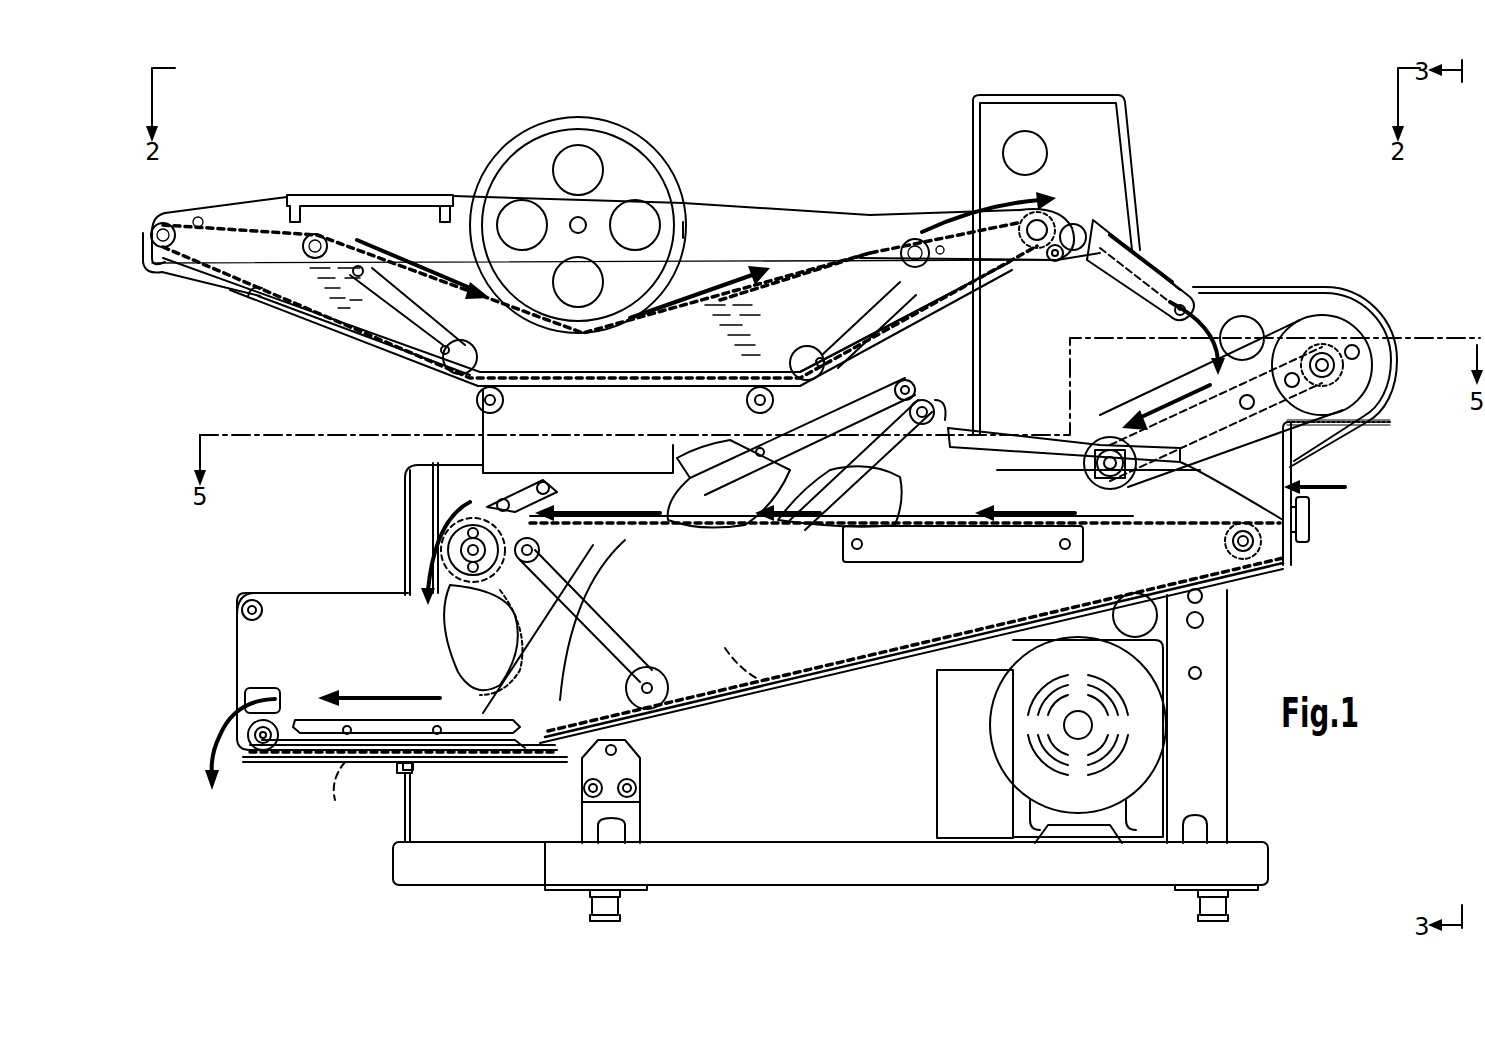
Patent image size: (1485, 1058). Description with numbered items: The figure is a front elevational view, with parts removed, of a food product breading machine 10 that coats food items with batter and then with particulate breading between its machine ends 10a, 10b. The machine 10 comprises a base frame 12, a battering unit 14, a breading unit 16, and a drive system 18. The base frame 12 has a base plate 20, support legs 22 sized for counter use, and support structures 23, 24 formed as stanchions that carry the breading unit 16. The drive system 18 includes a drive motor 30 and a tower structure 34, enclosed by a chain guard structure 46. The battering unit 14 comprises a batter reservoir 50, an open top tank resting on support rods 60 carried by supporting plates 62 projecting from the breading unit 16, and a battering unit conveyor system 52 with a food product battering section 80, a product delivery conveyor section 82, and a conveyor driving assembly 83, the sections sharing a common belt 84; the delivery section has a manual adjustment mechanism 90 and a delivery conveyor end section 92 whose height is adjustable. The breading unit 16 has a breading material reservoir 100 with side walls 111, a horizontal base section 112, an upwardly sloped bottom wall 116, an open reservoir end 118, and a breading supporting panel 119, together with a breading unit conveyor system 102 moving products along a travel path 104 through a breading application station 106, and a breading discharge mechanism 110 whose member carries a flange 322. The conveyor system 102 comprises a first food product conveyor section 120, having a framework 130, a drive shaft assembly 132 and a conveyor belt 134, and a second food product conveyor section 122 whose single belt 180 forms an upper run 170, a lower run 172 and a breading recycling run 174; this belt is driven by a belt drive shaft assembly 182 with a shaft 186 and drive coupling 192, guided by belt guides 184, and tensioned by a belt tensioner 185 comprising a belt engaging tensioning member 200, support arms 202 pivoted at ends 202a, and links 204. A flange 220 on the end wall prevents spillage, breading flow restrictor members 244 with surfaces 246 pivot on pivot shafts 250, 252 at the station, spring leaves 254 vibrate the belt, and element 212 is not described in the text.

The food product breading machine 10 is at (490, 88).
The machine end 10a is at (237, 655).
The machine end 10b is at (1300, 506).
The base frame 12 is at (840, 865).
The battering unit 14 is at (733, 195).
The breading unit 16 is at (330, 583).
The drive system 18 is at (1205, 283).
The base plate 20 is at (968, 870).
The support legs 22 is at (598, 905).
The support structure 23 is at (620, 768).
The support structure 24 is at (1203, 742).
The drive motor 30 is at (1051, 740).
The tower structure 34 is at (1100, 145).
The chain guard structure 46 is at (1025, 96).
The batter reservoir 50 is at (325, 336).
The battering unit conveyor system 52 is at (335, 230).
The support rods 60 is at (475, 398).
The supporting plates 62 is at (520, 419).
The food product battering section 80 is at (800, 262).
The product delivery conveyor section 82 is at (1125, 240).
The conveyor driving assembly 83 is at (1065, 195).
The conveyor belt 84 is at (850, 265).
The manual adjustment mechanism 90 is at (1078, 258).
The delivery conveyor end section 92 is at (1160, 272).
The breading material reservoir 100 is at (798, 708).
The breading unit conveyor system 102 is at (1325, 338).
The travel path 104 is at (1212, 300).
The breading application station 106 is at (886, 340).
The breading discharge mechanism 110 is at (1305, 550).
The side walls 111 is at (397, 671).
The horizontal base section 112 is at (312, 770).
The upwardly sloped bottom wall 116 is at (870, 658).
The reservoir end 118 is at (235, 618).
The breading supporting panel 119 is at (963, 544).
The first food product conveyor section 120 is at (1390, 378).
The second food product conveyor section 122 is at (1262, 565).
The framework 130 is at (1370, 346).
The drive shaft assembly 132 is at (1365, 364).
The conveyor belt 134 is at (1215, 376).
The upper run 170 is at (725, 527).
The lower run 172 is at (305, 718).
The breading recycling run 174 is at (540, 728).
The belt 180 is at (1128, 590).
The belt drive shaft assembly 182 is at (440, 596).
The belt guides 184 is at (1305, 541).
The belt tensioner 185 is at (620, 623).
The shaft 186 is at (478, 528).
The drive coupling 192 is at (265, 752).
The belt engaging tensioning member 200 is at (655, 692).
The tensioning member support arms 202 is at (578, 596).
The arm end 202a is at (528, 535).
The links 204 is at (585, 708).
The deflector plate 212 is at (985, 438).
The flange 220 is at (1345, 470).
The breading flow restrictor members 244 is at (745, 498).
The surface 246 is at (862, 544).
The pivot shaft 250 is at (928, 390).
The pivot shaft 252 is at (940, 416).
The spring leaves 254 is at (625, 503).
The flange 322 is at (1385, 423).